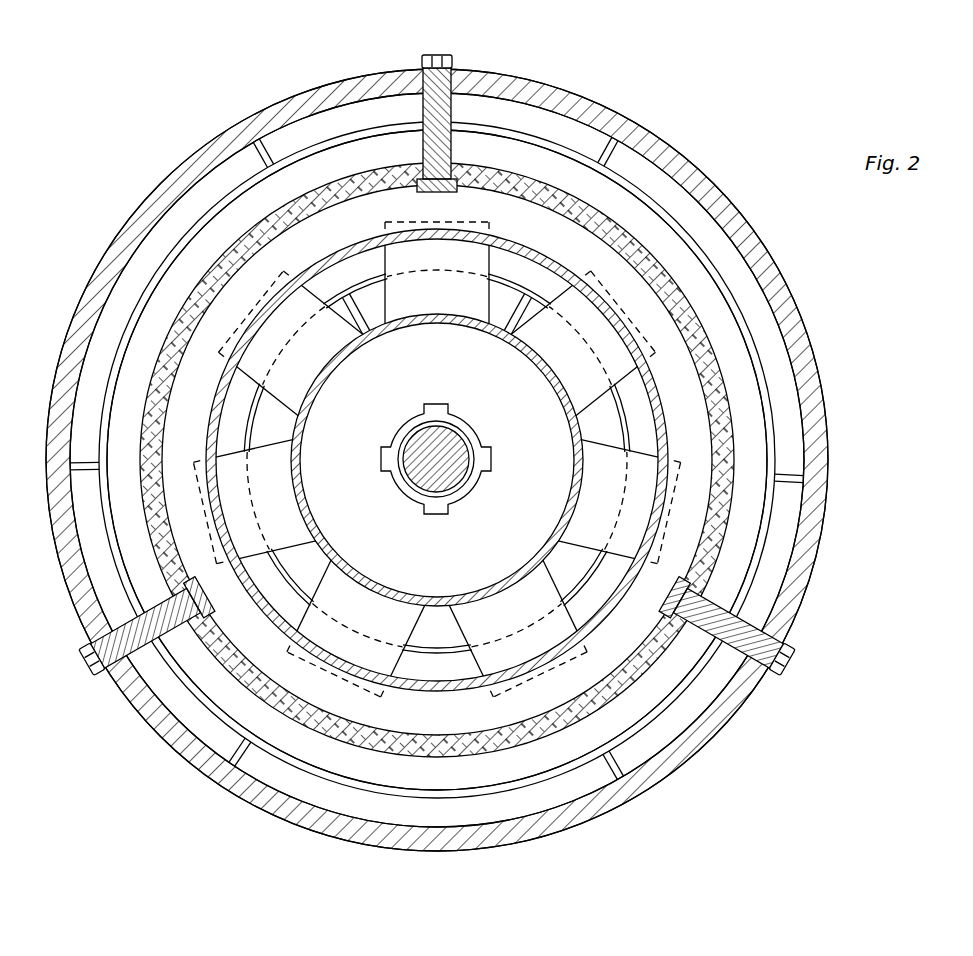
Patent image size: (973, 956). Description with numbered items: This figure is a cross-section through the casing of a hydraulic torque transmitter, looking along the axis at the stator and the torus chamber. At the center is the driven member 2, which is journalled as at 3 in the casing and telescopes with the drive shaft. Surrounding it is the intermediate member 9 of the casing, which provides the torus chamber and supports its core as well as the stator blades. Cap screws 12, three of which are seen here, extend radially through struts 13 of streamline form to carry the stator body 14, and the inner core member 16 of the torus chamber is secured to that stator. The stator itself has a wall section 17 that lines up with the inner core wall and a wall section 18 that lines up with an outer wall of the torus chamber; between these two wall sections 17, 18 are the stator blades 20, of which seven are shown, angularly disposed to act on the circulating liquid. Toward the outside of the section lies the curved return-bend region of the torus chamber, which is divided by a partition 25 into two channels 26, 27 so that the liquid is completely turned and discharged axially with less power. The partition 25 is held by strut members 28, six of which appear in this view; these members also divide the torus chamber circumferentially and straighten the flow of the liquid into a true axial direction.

The driven member 2 is at (447, 440).
The journal 3 is at (418, 500).
The intermediate member 9 is at (614, 97).
The cap screws 12 is at (430, 61).
The struts 13 is at (460, 100).
The stator body 14 is at (616, 658).
The inner core member 16 is at (644, 694).
The wall section 17 is at (670, 448).
The wall section 18 is at (488, 332).
The stator blades 20 is at (405, 330).
The partition 25 is at (664, 204).
The channel 26 is at (742, 246).
The channel 27 is at (768, 281).
The strut members 28 is at (258, 142).